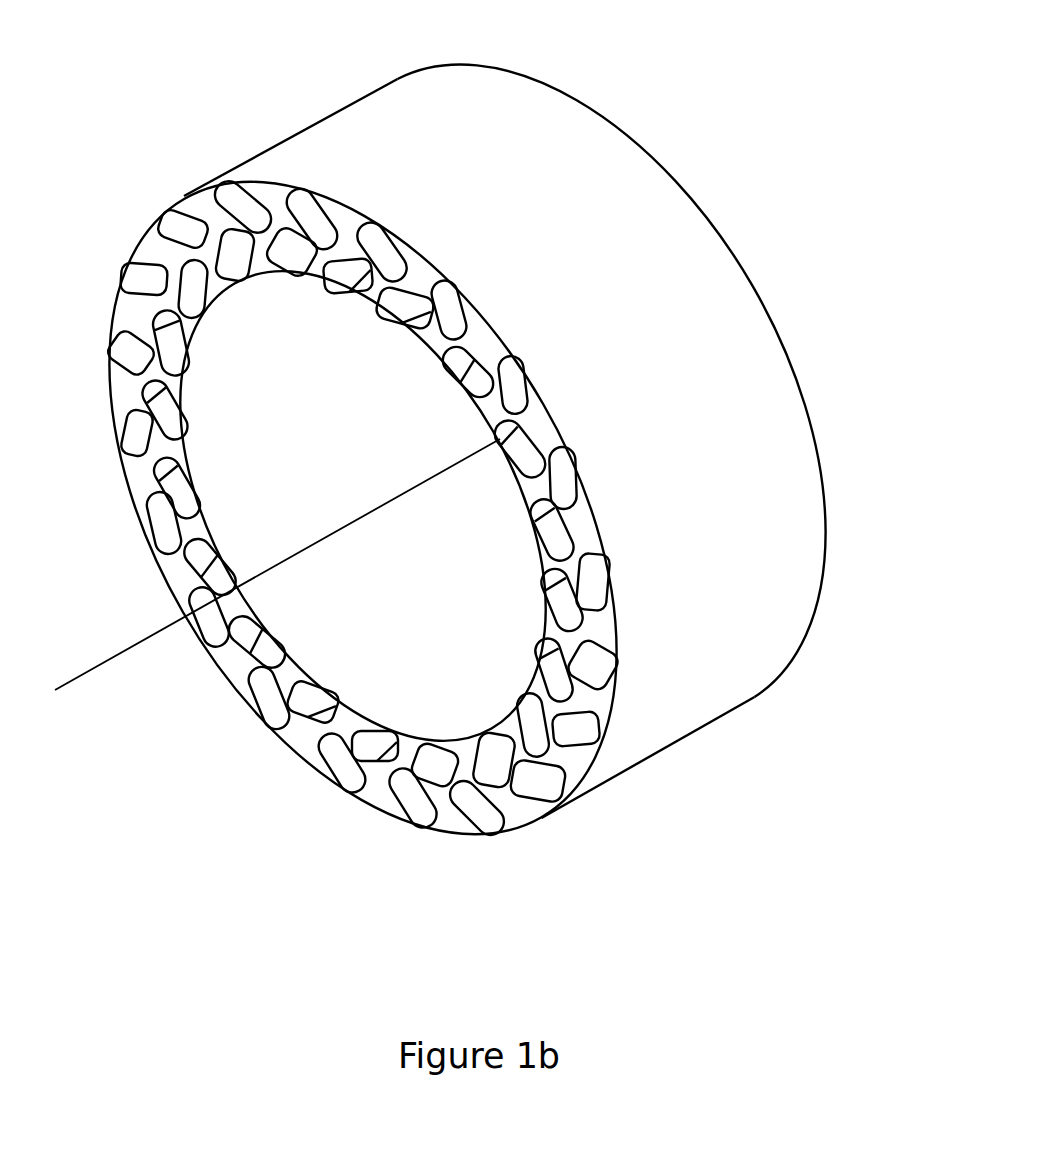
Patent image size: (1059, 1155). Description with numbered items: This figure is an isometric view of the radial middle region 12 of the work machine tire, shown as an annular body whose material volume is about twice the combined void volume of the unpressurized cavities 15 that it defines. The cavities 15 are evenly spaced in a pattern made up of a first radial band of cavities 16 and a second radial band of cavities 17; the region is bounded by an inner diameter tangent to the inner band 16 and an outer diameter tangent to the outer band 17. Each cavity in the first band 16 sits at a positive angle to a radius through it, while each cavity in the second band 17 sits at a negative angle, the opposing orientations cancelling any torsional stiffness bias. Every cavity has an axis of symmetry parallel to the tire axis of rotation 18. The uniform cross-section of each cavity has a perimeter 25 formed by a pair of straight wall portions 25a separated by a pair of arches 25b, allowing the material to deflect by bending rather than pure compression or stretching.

The radial middle region 12 is at (663, 135).
The unpressurized cavities 15 is at (404, 262).
The first radial band of cavities 16 is at (572, 794).
The second radial band of cavities 17 is at (613, 710).
The tire axis of rotation 18 is at (310, 548).
The perimeter 25 is at (363, 548).
The straight wall portions 25a is at (474, 836).
The arches 25b is at (393, 806).